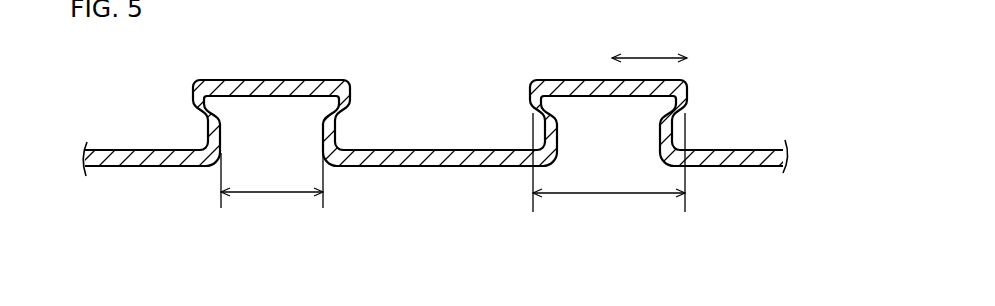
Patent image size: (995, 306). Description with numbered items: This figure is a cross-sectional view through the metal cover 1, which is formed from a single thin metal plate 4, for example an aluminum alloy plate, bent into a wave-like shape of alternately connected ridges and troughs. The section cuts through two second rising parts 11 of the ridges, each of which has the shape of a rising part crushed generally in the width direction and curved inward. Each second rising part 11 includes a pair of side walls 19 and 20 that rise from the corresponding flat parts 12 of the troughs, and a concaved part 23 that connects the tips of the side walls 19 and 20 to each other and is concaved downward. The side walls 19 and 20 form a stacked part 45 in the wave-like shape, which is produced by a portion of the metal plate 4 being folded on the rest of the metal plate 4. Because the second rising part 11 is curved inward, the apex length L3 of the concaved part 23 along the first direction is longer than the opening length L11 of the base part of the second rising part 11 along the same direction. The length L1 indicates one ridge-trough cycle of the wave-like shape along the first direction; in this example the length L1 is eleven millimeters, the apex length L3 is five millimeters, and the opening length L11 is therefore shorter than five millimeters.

The metal cover 1 is at (118, 192).
The metal plate 4 is at (728, 151).
The second rising part 11 is at (288, 63).
The flat part 12 is at (460, 132).
The side wall 19 is at (212, 137).
The side wall 20 is at (337, 135).
The concaved part 23 is at (257, 78).
The stacked part 45 is at (350, 72).
The length of one ridge-trough cycle L1 is at (653, 57).
The opening length L11 is at (273, 193).
The apex length L3 is at (607, 192).